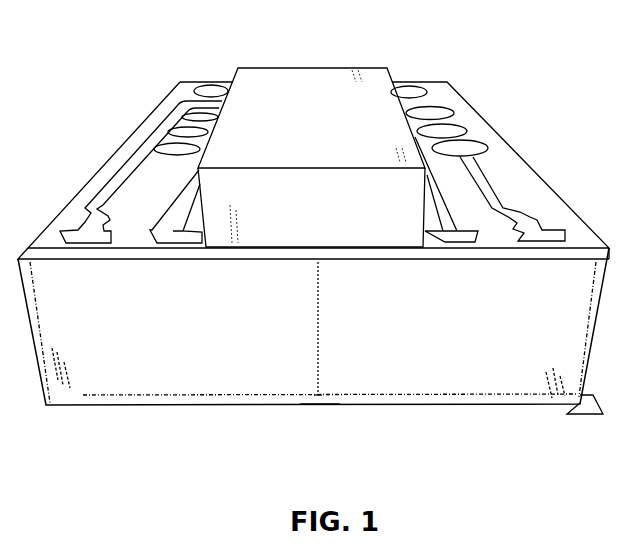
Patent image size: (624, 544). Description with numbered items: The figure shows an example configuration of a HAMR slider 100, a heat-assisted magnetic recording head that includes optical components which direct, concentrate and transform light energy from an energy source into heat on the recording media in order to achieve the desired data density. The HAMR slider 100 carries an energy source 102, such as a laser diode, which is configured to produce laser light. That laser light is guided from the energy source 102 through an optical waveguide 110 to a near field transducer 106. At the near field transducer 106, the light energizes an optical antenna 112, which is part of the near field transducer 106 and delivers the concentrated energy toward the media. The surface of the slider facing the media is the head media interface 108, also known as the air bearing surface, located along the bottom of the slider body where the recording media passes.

The HAMR slider 100 is at (313, 243).
The energy source 102 is at (252, 67).
The near field transducer 106 is at (320, 393).
The head media interface 108 is at (597, 418).
The optical waveguide 110 is at (319, 319).
The optical antenna 112 is at (318, 395).